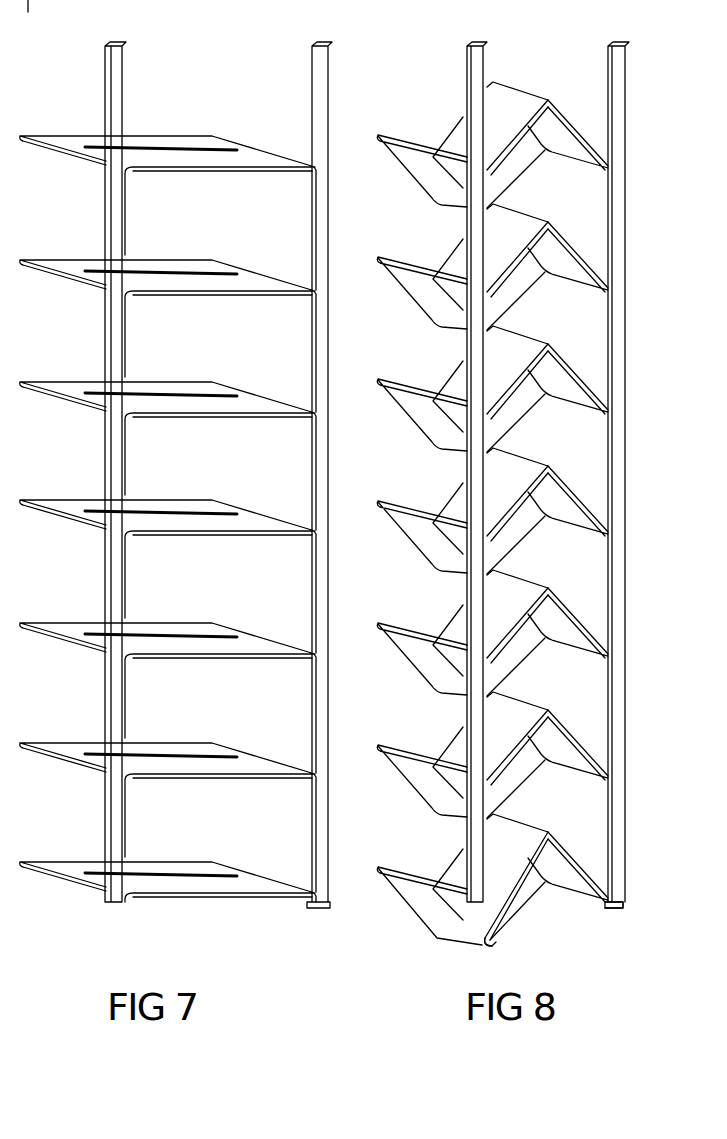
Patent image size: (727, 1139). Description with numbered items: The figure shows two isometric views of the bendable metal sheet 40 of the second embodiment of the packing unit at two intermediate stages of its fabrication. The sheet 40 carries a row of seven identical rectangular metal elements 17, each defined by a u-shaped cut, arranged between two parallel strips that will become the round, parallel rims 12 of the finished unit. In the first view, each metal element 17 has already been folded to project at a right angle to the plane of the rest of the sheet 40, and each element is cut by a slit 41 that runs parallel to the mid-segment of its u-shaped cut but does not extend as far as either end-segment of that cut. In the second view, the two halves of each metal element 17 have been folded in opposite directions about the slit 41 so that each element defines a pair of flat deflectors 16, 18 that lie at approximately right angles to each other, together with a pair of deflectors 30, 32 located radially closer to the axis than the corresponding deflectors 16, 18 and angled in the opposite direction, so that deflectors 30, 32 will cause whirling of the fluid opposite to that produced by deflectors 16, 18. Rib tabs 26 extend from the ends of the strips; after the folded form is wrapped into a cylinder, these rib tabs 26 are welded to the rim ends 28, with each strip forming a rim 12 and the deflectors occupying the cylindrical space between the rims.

In FIG. 7, the rim 12 is at (120, 223).
In FIG. 8, the rim 12 is at (537, 460).
In FIG. 7, the metal element 17 is at (187, 139).
In FIG. 7, the slit 41 is at (204, 152).
In FIG. 7, the sheet 40 is at (196, 516).
In FIG. 8, the sheet 40 is at (515, 508).
In FIG. 8, the rib tab 26 is at (467, 63).
In FIG. 8, the deflector 16 is at (507, 121).
In FIG. 8, the deflector 18 is at (569, 149).
In FIG. 8, the deflector 30 is at (441, 186).
In FIG. 8, the deflector 32 is at (520, 170).
In FIG. 8, the rim end 28 is at (502, 937).